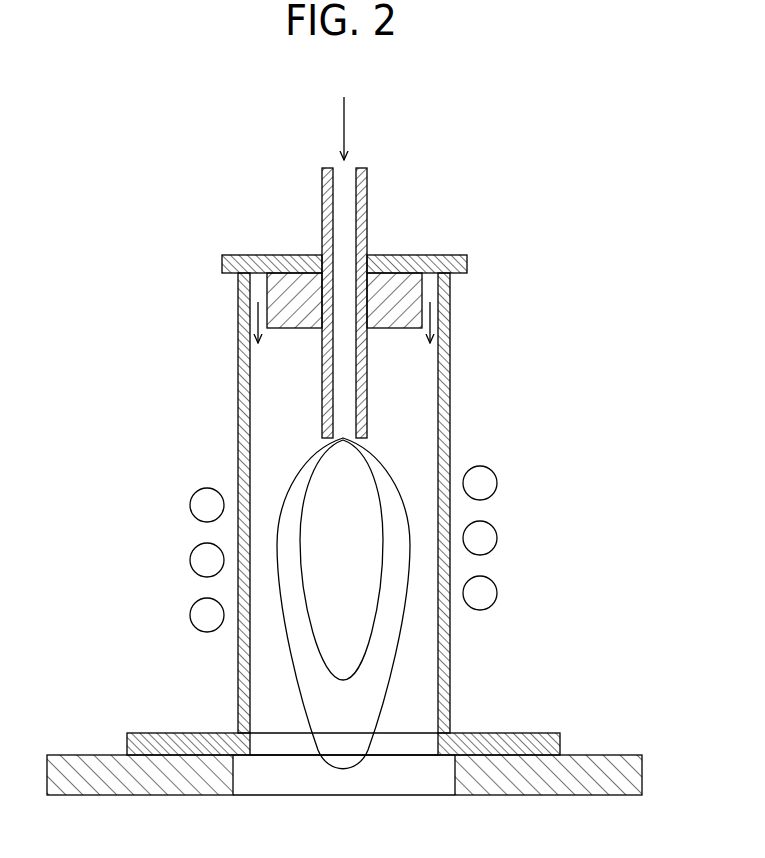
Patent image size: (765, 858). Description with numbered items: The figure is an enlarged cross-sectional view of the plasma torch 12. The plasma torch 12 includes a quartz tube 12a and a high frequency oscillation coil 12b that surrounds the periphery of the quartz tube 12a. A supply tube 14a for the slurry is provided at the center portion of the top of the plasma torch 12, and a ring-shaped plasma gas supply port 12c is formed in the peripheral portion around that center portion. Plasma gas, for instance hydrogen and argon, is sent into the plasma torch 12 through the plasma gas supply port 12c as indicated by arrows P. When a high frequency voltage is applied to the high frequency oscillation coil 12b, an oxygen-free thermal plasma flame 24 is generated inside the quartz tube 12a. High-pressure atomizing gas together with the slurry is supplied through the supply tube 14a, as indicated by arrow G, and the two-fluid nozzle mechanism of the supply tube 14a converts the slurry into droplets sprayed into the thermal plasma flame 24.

The plasma torch 12 is at (489, 155).
The quartz tube 12a is at (238, 412).
The high frequency oscillation coil 12b is at (203, 501).
The plasma gas supply port 12c is at (250, 290).
The supply tube 14a is at (368, 207).
The thermal plasma flame 24 is at (355, 627).
The arrow G is at (347, 129).
The arrows P is at (243, 321).